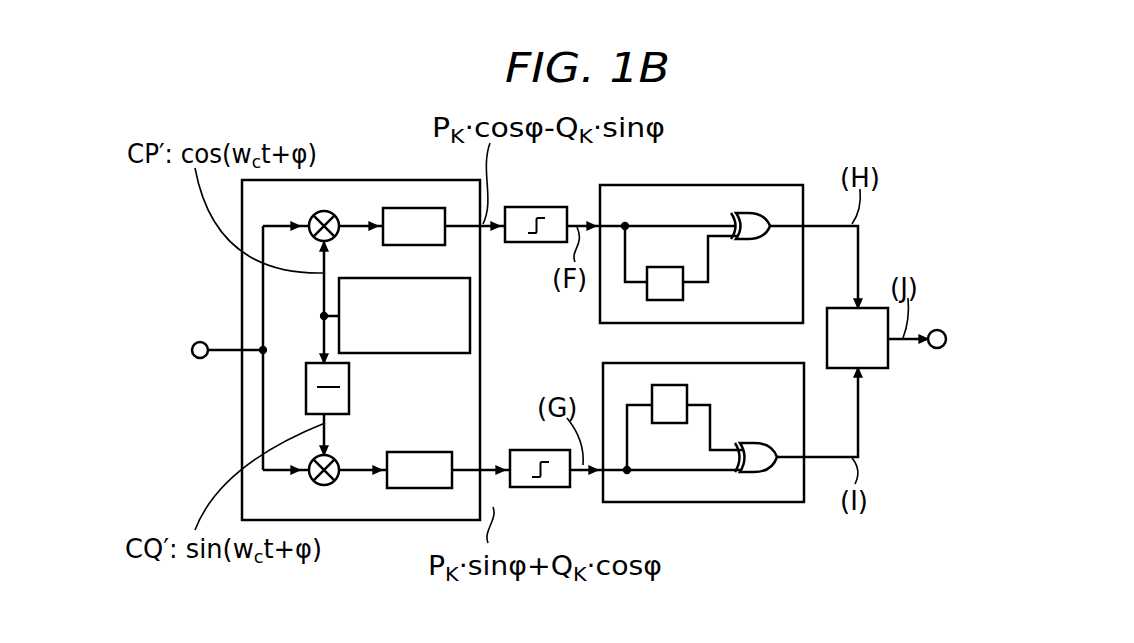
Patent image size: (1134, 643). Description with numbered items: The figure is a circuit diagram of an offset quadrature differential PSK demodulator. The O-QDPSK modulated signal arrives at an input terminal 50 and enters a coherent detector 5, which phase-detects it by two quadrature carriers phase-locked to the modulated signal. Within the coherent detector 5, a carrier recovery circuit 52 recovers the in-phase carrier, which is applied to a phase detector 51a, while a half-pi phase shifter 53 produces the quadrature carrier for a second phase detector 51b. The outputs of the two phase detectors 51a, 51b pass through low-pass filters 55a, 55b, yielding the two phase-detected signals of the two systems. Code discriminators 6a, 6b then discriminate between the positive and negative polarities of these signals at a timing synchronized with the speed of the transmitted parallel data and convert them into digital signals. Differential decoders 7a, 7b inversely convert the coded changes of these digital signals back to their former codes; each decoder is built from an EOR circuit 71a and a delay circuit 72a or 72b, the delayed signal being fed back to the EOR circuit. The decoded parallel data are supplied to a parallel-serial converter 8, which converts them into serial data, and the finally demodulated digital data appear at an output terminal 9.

The coherent detector 5 is at (353, 180).
The input terminal 50 is at (193, 346).
The phase detector 51a is at (312, 214).
The phase detector 51b is at (318, 483).
The carrier recovery circuit 52 is at (410, 354).
The π/2 phase shifter 53 is at (349, 378).
The low-pass filter 55a is at (400, 246).
The low-pass filter 55b is at (408, 451).
The code discriminator 6a is at (523, 207).
The code discriminator 6b is at (542, 488).
The differential decoder 7a is at (752, 160).
The differential decoder 7b is at (723, 507).
The EOR circuit 71a is at (745, 243).
The delay circuit 72a is at (662, 267).
The delay circuit 72b is at (668, 426).
The parallel-serial converter 8 is at (880, 370).
The output terminal 9 is at (939, 329).